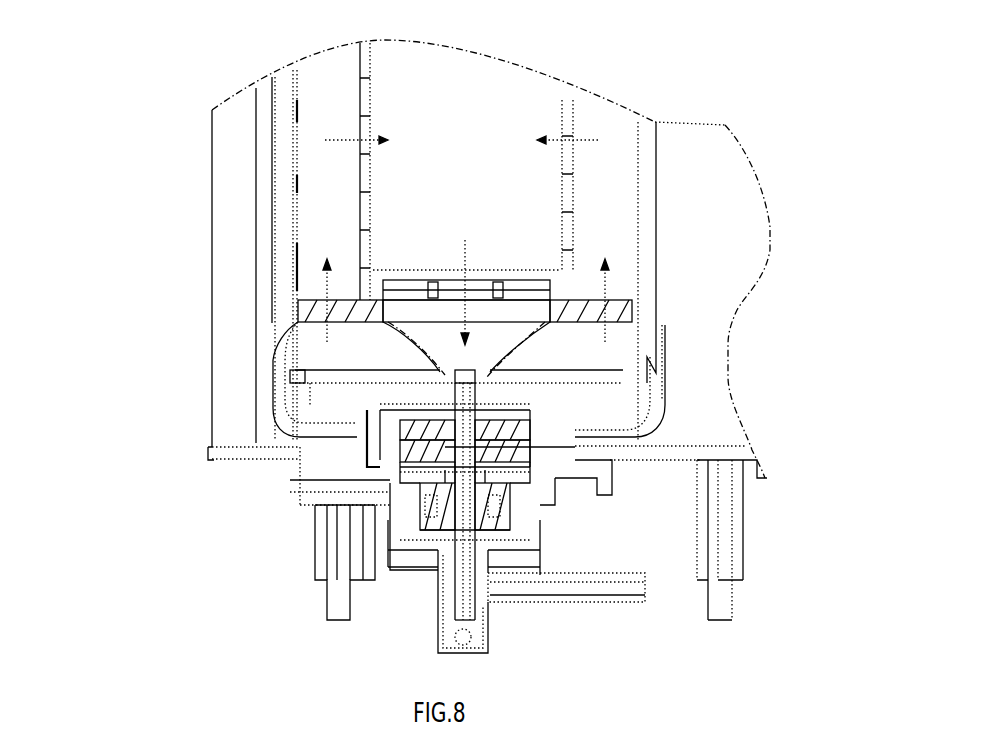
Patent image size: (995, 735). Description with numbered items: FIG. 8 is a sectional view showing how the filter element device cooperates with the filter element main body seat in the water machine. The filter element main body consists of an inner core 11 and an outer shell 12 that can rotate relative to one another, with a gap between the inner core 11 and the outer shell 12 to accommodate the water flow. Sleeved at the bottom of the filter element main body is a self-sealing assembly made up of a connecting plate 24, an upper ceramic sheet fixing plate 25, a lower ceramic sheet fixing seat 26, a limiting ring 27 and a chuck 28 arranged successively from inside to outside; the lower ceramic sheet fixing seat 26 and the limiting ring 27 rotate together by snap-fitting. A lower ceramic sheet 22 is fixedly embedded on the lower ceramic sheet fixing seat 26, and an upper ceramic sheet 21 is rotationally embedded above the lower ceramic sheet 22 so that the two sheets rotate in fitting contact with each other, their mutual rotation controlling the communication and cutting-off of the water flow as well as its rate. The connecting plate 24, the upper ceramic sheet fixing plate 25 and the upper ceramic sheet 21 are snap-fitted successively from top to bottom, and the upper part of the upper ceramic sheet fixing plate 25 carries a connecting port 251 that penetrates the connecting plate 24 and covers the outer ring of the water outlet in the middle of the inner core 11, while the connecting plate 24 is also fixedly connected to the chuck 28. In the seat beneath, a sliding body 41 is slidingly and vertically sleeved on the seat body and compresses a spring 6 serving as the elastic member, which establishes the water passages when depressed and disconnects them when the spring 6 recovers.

The inner core 11 is at (362, 181).
The outer shell 12 is at (283, 260).
The connecting plate 24 is at (430, 405).
The upper ceramic sheet fixing plate 25 is at (430, 418).
The upper ceramic sheet 21 is at (430, 435).
The lower ceramic sheet 22 is at (430, 455).
The lower ceramic sheet fixing seat 26 is at (437, 478).
The limiting ring 27 is at (363, 490).
The chuck 28 is at (415, 515).
The sliding body 41 is at (430, 540).
The spring 6 is at (440, 560).
The connecting port 251 is at (478, 410).